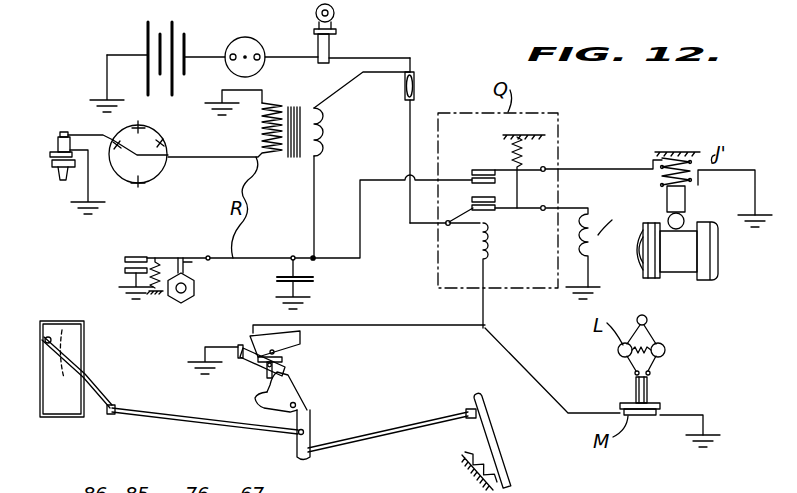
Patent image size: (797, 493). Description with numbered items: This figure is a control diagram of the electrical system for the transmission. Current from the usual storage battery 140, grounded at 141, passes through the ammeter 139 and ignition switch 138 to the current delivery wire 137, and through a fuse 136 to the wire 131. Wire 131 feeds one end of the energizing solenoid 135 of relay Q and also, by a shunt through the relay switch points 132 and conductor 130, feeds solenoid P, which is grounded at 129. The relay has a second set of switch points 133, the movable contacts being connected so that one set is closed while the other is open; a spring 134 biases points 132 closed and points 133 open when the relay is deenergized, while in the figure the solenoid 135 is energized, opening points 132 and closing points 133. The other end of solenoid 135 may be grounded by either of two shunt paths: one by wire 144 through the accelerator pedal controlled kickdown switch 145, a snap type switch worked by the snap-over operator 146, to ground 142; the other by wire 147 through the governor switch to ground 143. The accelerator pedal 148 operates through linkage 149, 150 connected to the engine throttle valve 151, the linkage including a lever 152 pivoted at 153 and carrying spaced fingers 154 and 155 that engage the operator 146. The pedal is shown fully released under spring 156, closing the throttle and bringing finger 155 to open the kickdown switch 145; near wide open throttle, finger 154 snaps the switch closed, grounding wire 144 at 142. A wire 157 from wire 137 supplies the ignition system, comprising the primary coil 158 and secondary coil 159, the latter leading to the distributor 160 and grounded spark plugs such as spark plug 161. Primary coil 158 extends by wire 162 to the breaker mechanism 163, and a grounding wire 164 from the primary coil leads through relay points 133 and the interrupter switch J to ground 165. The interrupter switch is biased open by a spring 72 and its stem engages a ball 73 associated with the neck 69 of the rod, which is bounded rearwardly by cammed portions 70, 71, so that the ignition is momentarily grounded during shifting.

The storage battery 140 is at (147, 33).
The ground 141 is at (96, 98).
The ammeter 139 is at (251, 33).
The ignition switch 138 is at (331, 43).
The wire 137 is at (360, 60).
The fuse 136 is at (414, 80).
The wire 131 is at (407, 153).
The wire 157 is at (341, 98).
The secondary coil 159 is at (261, 133).
The primary coil 158 is at (326, 132).
The wire 162 is at (316, 222).
The distributor 160 is at (154, 182).
The spark plug 161 is at (58, 147).
The breaker mechanism 163 is at (174, 257).
The grounding wire 164 is at (362, 225).
The switch points 132 is at (447, 226).
The switch points 133 is at (482, 153).
The spring 134 is at (519, 157).
The conductor 130 is at (566, 207).
The ground 129 is at (578, 303).
The energizing solenoid 135 is at (496, 258).
The wire 144 is at (403, 324).
The wire 147 is at (527, 368).
The ground 143 is at (708, 450).
The kickdown switch 145 is at (253, 335).
The ground 142 is at (195, 368).
The snap-over operator 146 is at (262, 379).
The finger 155 is at (282, 372).
The finger 154 is at (257, 402).
The lever 152 is at (308, 415).
The pivot 153 is at (297, 405).
The linkage 150 is at (193, 421).
The linkage 149 is at (357, 446).
The throttle valve 151 is at (40, 340).
The accelerator pedal 148 is at (492, 428).
The spring 156 is at (465, 460).
The spring 72 is at (663, 162).
The ball 73 is at (684, 217).
The ground 165 is at (757, 226).
The neck 69 is at (680, 268).
The cammed portion 70 is at (692, 278).
The cammed portion 71 is at (718, 277).